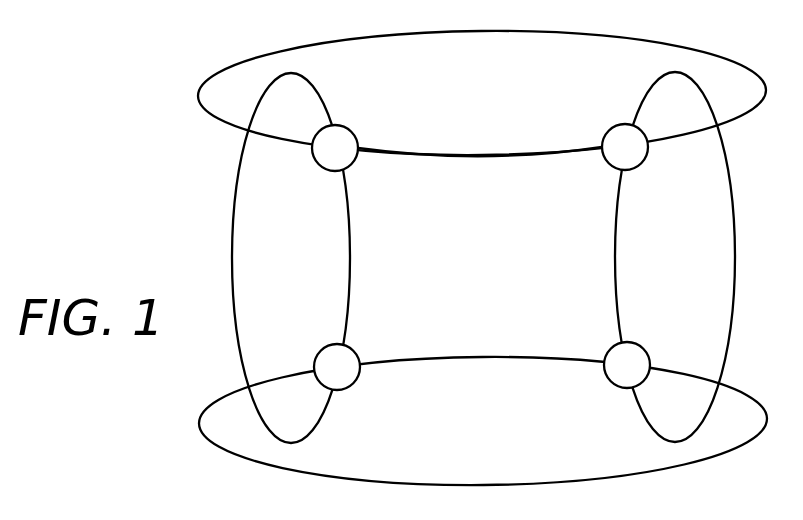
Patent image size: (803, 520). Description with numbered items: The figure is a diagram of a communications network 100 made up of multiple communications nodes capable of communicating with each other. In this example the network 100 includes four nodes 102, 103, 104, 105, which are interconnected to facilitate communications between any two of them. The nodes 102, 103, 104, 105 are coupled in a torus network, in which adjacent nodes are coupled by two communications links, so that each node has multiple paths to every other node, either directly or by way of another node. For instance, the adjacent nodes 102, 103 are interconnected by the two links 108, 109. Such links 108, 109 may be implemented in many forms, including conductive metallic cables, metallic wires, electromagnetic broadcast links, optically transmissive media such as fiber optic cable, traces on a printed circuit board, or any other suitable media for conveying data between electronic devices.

The network 100 is at (148, 41).
The node 102 is at (353, 167).
The node 103 is at (608, 163).
The node 104 is at (358, 345).
The node 105 is at (612, 345).
The link 108 is at (483, 153).
The link 109 is at (487, 29).